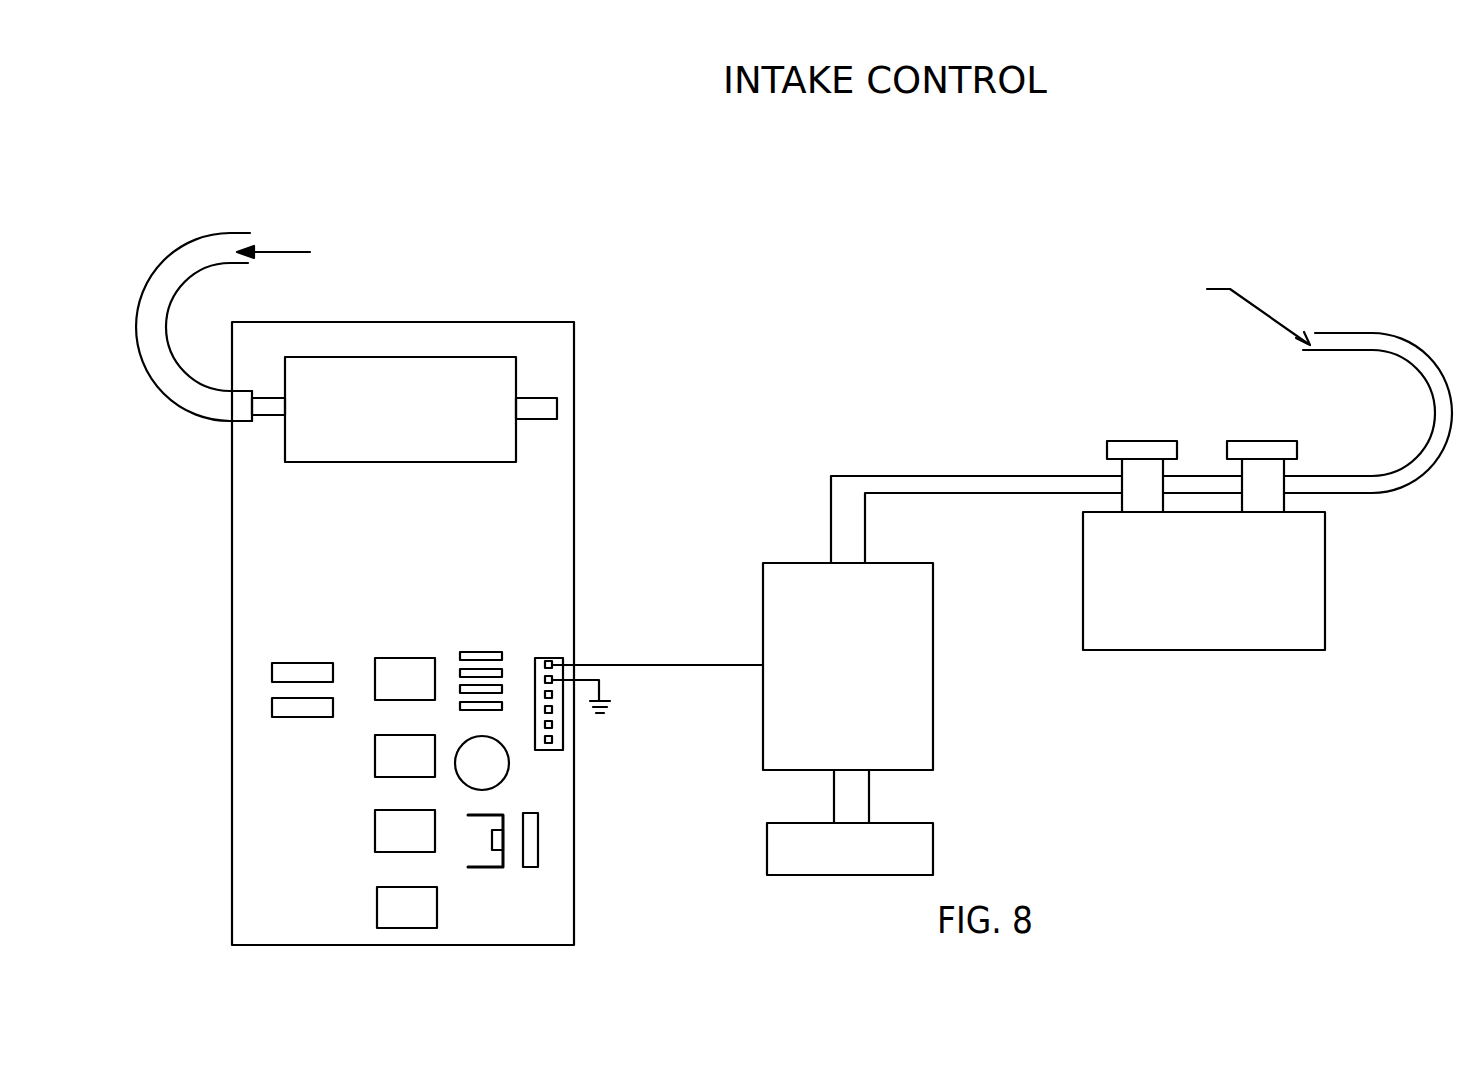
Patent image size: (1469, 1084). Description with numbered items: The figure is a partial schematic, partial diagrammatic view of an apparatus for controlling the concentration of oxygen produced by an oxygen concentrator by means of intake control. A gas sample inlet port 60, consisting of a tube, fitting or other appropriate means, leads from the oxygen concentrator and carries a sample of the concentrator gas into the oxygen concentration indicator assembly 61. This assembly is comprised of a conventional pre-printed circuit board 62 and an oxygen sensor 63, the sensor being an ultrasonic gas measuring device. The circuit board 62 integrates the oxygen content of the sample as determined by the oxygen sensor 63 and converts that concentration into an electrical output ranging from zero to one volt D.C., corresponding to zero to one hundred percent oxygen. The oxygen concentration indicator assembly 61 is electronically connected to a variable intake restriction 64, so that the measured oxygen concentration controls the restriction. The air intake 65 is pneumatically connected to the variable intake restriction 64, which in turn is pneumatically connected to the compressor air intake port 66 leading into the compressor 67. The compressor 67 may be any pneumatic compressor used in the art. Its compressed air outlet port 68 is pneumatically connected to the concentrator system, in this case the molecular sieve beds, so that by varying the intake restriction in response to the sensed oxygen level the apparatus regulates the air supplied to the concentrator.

The gas sample inlet port 60 is at (190, 421).
The oxygen concentration indicator assembly 61 is at (574, 497).
The pre-printed circuit board 62 is at (547, 601).
The oxygen sensor 63 is at (500, 387).
The variable intake restriction 64 is at (933, 717).
The air intake 65 is at (933, 858).
The compressor air intake port 66 is at (982, 476).
The compressor 67 is at (1160, 650).
The compressed air outlet port 68 is at (1353, 495).